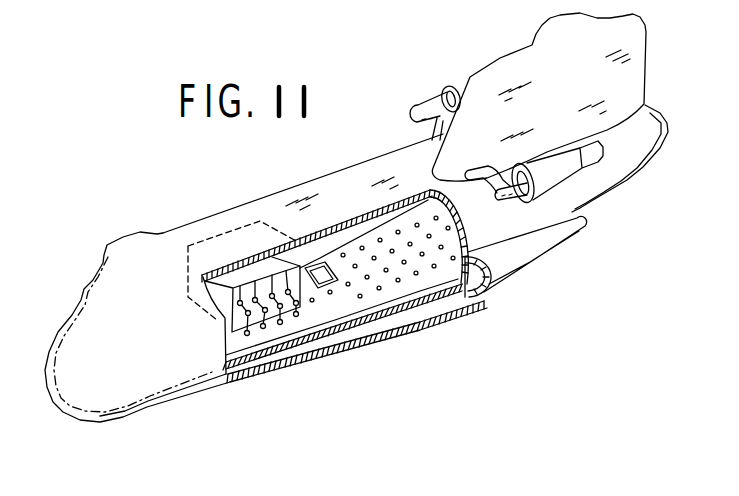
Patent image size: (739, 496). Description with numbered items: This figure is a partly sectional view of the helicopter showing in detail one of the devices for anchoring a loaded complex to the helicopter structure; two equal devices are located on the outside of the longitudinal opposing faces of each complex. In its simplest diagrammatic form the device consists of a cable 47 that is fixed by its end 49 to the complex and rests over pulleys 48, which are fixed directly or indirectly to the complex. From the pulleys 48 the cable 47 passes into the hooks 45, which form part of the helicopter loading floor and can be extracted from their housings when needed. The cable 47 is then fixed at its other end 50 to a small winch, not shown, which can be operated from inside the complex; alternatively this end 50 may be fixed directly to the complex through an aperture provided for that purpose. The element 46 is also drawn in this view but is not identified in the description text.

The conductor leads 45 is at (249, 336).
The lead wires 46 is at (268, 326).
The terminal pads 47 is at (303, 311).
The electronic module 48 is at (237, 276).
The aperture 49 is at (283, 262).
The housing channel 50 is at (232, 300).